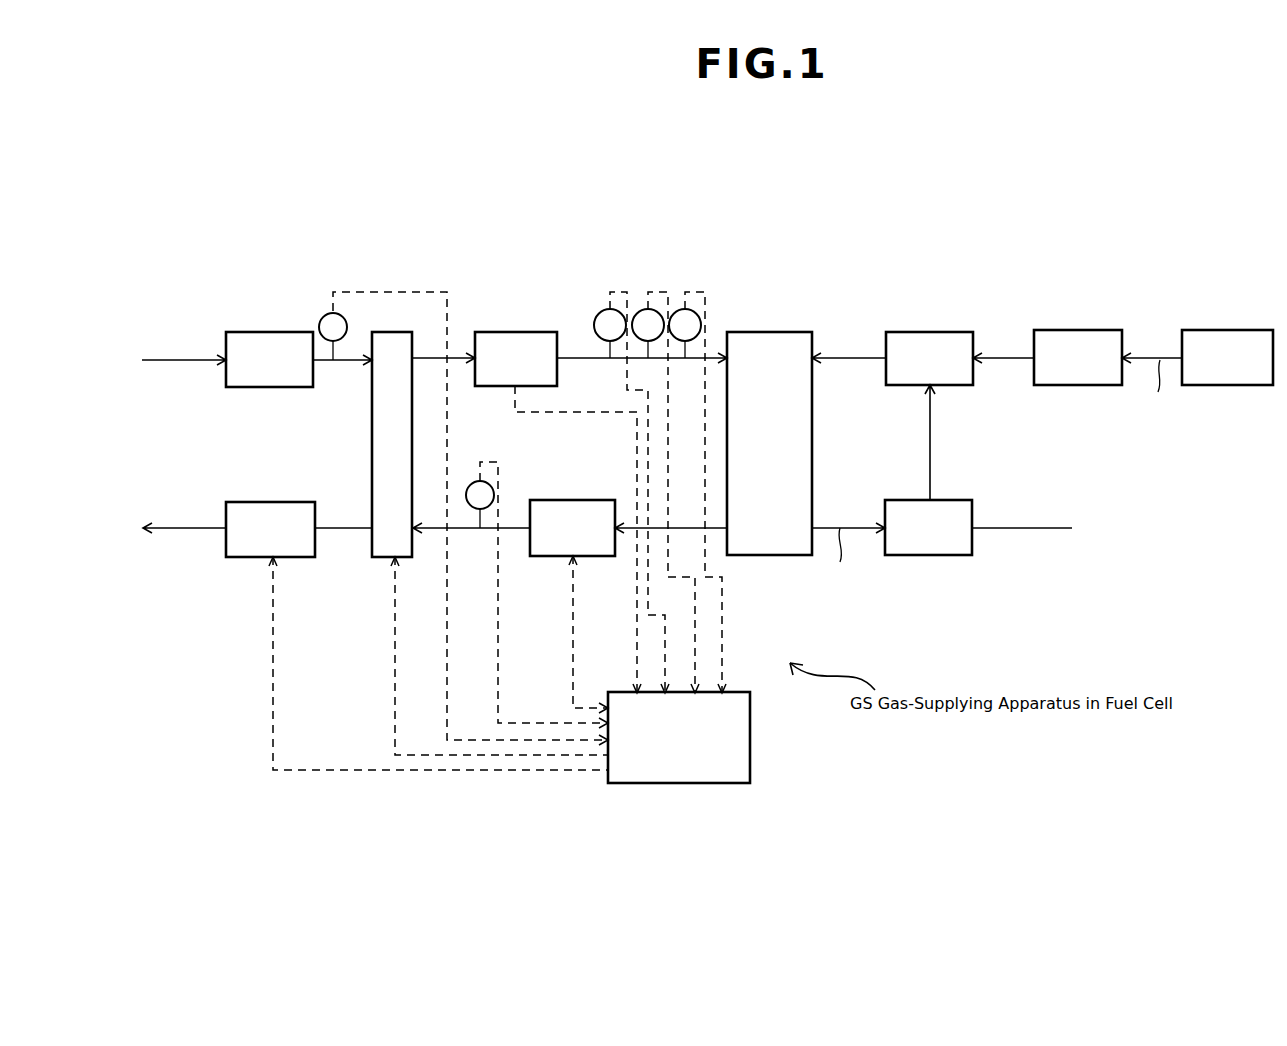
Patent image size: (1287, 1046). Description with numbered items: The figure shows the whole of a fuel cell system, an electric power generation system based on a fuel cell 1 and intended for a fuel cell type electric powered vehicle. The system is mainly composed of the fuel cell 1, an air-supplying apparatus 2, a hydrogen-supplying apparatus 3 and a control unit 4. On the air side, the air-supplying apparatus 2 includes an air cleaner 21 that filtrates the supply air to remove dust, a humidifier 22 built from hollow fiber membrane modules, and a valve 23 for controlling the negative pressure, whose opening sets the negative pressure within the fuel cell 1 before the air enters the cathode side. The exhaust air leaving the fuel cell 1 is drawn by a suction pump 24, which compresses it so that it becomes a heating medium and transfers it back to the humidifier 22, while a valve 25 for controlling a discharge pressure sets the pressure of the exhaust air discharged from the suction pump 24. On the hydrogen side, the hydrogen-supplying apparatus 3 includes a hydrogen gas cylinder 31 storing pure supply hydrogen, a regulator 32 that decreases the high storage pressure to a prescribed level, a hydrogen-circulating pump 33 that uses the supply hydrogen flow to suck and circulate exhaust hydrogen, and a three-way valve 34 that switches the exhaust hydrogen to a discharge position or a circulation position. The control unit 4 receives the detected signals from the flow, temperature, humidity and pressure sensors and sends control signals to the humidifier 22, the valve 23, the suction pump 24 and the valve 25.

The fuel cell 1 is at (763, 308).
The air-supplying apparatus 2 is at (590, 182).
The hydrogen-supplying apparatus 3 is at (1070, 223).
The control unit 4 is at (680, 808).
The air cleaner 21 is at (273, 332).
The humidifier 22 is at (393, 332).
The valve for controlling the negative pressure 23 is at (515, 332).
The suction pump 24 is at (573, 500).
The valve for controlling a discharge pressure 25 is at (274, 502).
The hydrogen gas cylinder 31 is at (1228, 330).
The regulator 32 is at (1078, 330).
The hydrogen-circulating pump 33 is at (930, 332).
The three-way valve 34 is at (930, 555).